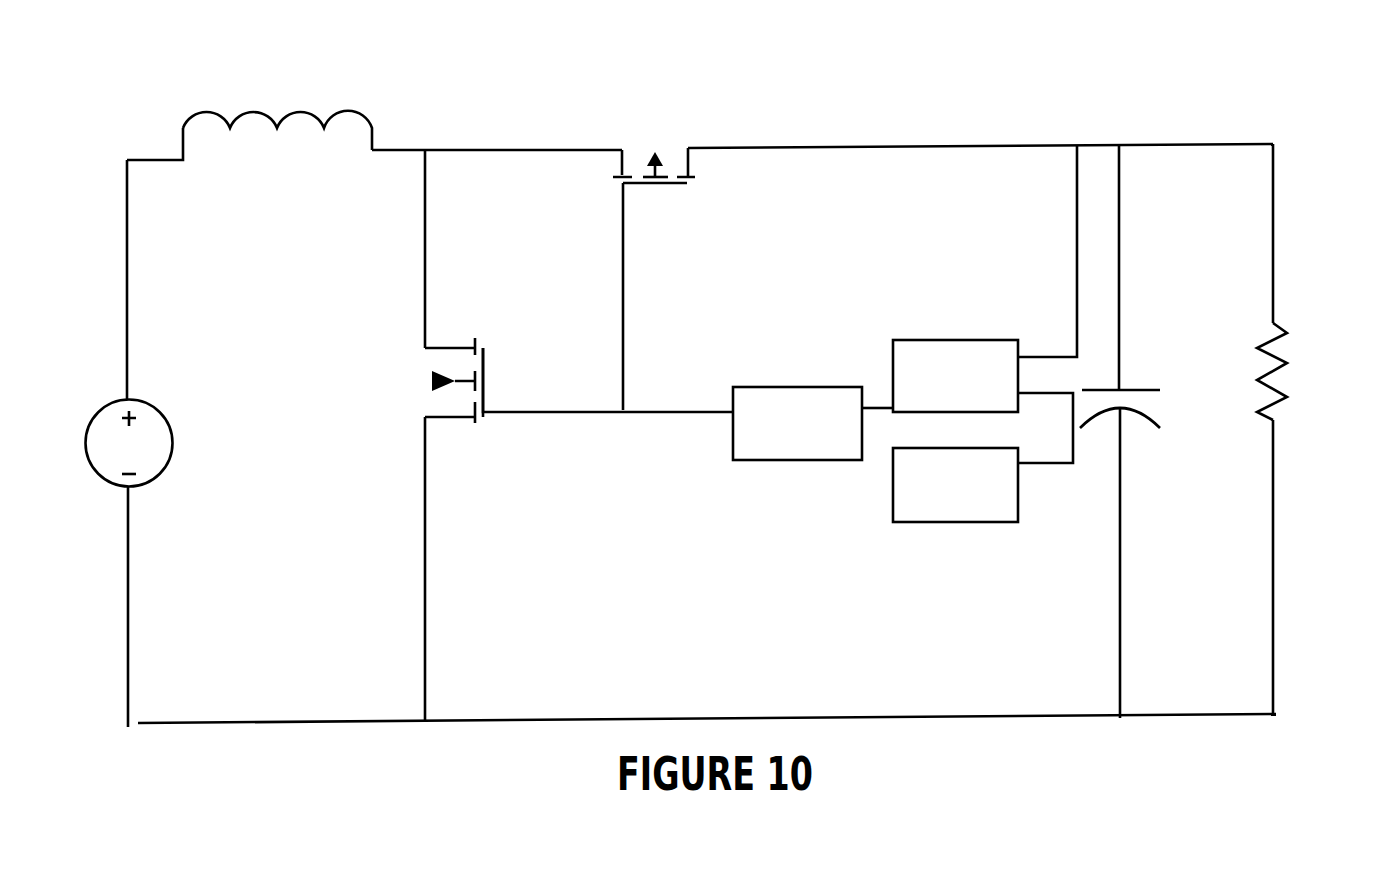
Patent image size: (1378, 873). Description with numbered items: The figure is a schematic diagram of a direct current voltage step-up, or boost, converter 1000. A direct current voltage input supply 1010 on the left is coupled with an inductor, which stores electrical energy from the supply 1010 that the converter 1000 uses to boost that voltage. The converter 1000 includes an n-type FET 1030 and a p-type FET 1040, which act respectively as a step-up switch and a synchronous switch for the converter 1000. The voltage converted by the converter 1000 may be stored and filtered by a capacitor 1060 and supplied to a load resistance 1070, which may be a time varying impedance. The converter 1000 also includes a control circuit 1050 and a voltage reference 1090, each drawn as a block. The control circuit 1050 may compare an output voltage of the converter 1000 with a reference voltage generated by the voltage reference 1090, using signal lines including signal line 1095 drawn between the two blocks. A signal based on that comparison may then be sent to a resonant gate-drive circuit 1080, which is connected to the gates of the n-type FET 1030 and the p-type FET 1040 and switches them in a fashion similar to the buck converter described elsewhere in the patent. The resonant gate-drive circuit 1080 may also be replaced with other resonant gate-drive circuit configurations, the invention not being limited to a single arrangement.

The direct current voltage step-up (boost) converter 1000 is at (812, 62).
The direct current voltage input supply 1010 is at (125, 400).
The n-type FET 1030 is at (418, 368).
The p-type FET 1040 is at (660, 143).
The control circuit 1050 is at (956, 340).
The capacitor 1060 is at (1130, 390).
The load resistance 1070 is at (1283, 362).
The resonant gate-drive circuit 1080 is at (797, 387).
The voltage reference 1090 is at (893, 487).
The signal line 1095 is at (1055, 465).